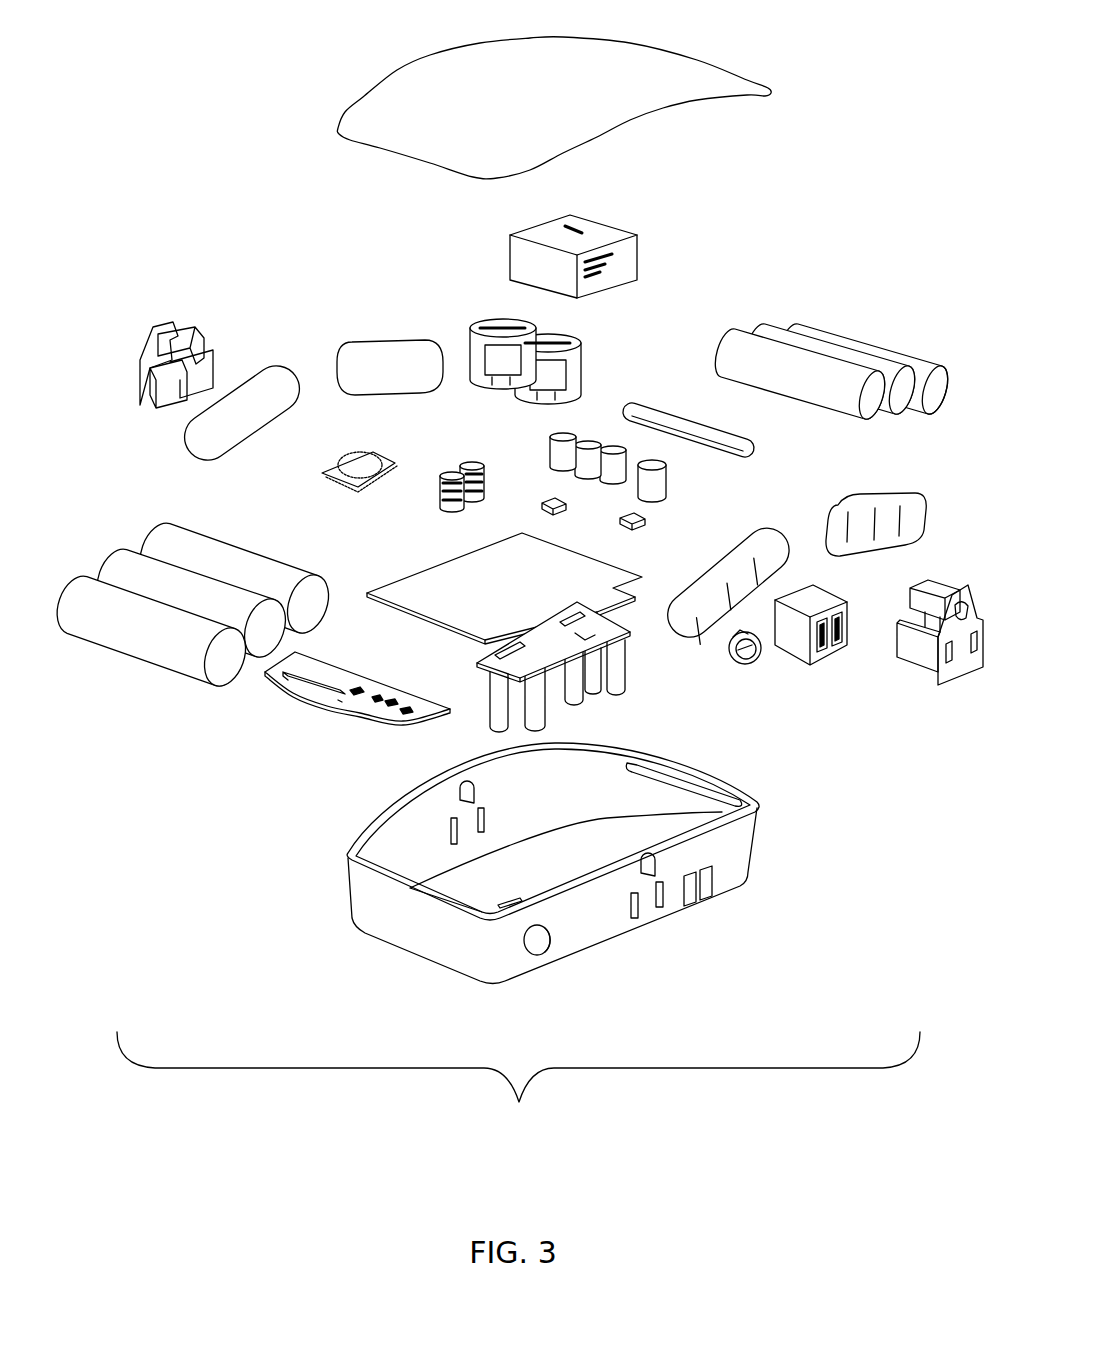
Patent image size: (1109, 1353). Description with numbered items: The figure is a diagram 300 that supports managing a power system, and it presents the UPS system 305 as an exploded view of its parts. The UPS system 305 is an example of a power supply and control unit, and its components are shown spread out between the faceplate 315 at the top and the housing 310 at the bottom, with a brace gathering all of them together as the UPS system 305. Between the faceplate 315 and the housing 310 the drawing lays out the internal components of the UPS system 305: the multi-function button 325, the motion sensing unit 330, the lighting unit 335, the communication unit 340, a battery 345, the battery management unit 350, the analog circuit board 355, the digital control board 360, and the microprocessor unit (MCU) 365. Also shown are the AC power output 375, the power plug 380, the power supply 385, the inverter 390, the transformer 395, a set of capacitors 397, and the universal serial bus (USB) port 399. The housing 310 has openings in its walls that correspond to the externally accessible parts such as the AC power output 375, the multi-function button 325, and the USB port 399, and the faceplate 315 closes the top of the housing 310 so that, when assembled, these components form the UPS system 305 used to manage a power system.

The diagram 300 is at (806, 1194).
The UPS system 305 is at (518, 1082).
The housing 310 is at (450, 973).
The faceplate 315 is at (430, 163).
The multi-function button 325 is at (745, 668).
The motion sensing unit 330 is at (343, 488).
The lighting unit 335 is at (727, 467).
The communication unit 340 is at (335, 713).
The battery 345 is at (153, 663).
The battery management unit 350 is at (693, 633).
The analog circuit board 355 is at (450, 628).
The digital control board 360 is at (270, 673).
The microprocessor unit (MCU) 365 is at (300, 697).
The AC power output 375 is at (165, 408).
The power plug 380 is at (588, 692).
The power supply 385 is at (815, 405).
The inverter 390 is at (637, 262).
The transformer 395 is at (482, 380).
The capacitors 397 is at (450, 512).
The universal serial bus (USB) port 399 is at (805, 657).